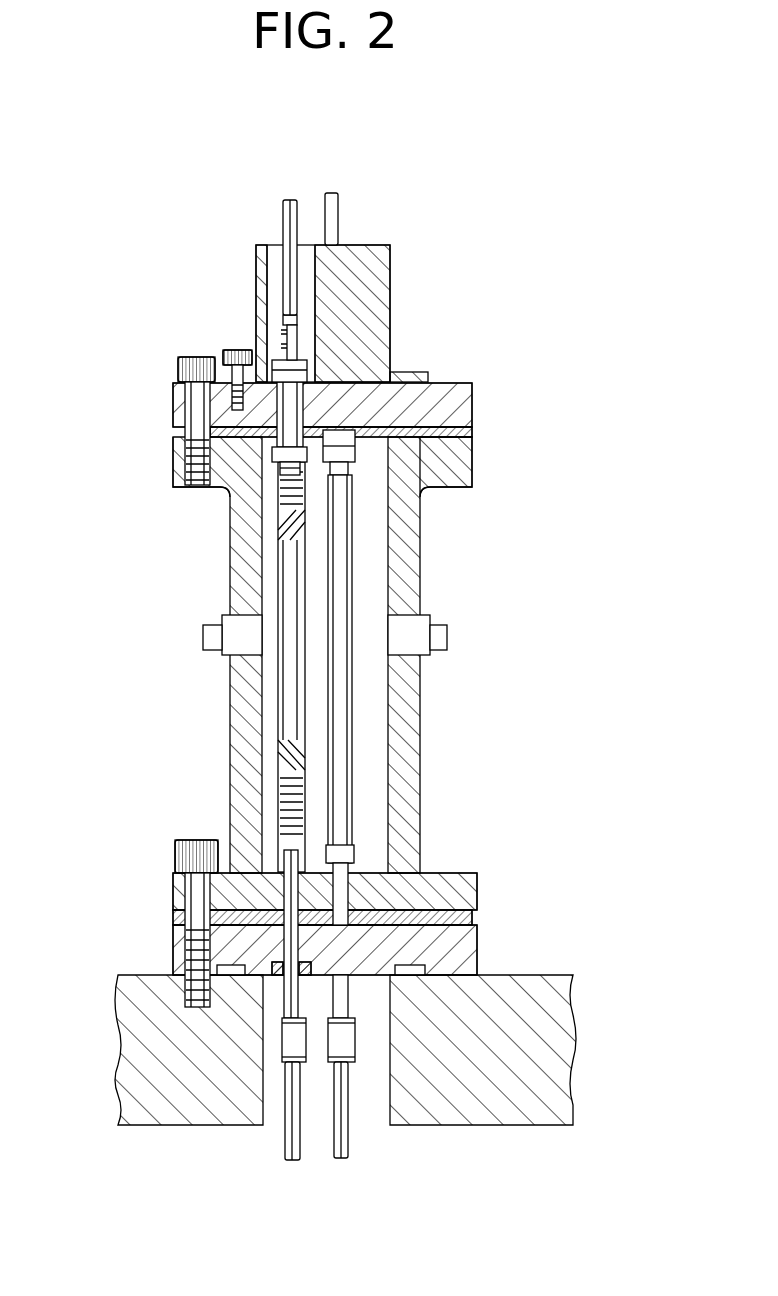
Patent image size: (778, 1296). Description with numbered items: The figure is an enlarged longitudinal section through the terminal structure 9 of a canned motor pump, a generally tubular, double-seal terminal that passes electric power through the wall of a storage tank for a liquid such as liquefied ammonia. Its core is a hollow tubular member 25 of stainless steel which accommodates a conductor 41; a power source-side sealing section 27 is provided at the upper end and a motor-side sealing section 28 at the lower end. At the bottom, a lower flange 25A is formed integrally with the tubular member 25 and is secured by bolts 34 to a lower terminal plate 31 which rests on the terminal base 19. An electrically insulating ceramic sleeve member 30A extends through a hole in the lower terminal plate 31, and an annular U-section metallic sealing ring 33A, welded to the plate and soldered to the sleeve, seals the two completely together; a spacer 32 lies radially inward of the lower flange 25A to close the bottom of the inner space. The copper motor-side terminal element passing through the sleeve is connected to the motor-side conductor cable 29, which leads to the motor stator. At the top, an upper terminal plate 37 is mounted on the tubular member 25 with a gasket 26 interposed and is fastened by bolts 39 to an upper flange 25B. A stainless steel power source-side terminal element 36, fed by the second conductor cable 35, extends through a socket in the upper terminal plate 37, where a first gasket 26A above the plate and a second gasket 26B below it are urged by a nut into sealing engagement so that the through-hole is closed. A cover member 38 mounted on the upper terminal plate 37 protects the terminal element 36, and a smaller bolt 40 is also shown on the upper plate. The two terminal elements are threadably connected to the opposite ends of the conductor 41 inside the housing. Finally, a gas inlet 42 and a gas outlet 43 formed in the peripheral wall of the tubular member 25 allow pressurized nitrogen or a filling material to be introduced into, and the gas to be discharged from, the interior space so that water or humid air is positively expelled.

The terminal structure 9 is at (222, 282).
The terminal base 19 is at (535, 1020).
The hollow tubular member 25 is at (412, 735).
The lower flange 25A is at (458, 897).
The upper flange 25B is at (452, 473).
The gasket 26 is at (447, 457).
The first gasket 26A is at (317, 397).
The second gasket 26B is at (280, 450).
The power source-side sealing section 27 is at (470, 376).
The motor-side sealing section 28 is at (468, 868).
The motor-side conductor cable 29 is at (290, 1140).
The sleeve member 30A is at (292, 990).
The lower terminal plate 31 is at (458, 952).
The spacer 32 is at (372, 868).
The metallic sealing ring 33A is at (282, 962).
The bolts 34 is at (198, 897).
The second conductor cable 35 is at (290, 217).
The power source-side terminal element 36 is at (292, 345).
The upper terminal plate 37 is at (458, 410).
The cover member 38 is at (372, 262).
The bolts 39 is at (190, 397).
The small bolt 40 is at (238, 350).
The conductor 41 is at (292, 712).
The gas inlet 42 is at (392, 637).
The gas outlet 43 is at (258, 613).